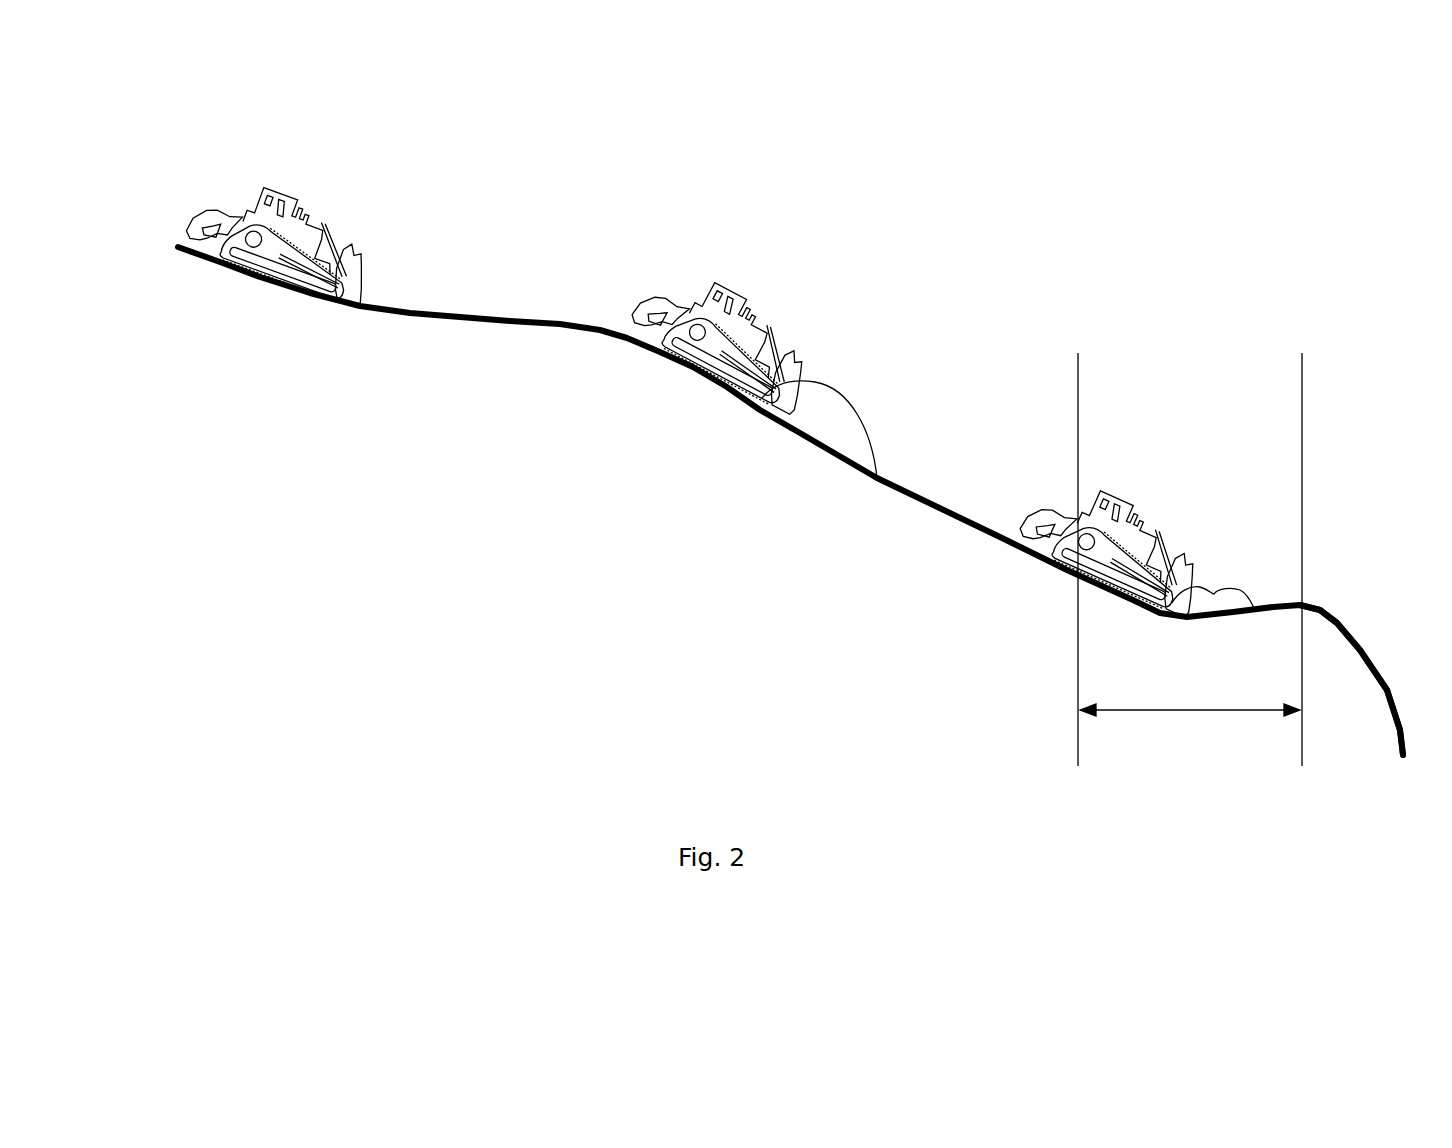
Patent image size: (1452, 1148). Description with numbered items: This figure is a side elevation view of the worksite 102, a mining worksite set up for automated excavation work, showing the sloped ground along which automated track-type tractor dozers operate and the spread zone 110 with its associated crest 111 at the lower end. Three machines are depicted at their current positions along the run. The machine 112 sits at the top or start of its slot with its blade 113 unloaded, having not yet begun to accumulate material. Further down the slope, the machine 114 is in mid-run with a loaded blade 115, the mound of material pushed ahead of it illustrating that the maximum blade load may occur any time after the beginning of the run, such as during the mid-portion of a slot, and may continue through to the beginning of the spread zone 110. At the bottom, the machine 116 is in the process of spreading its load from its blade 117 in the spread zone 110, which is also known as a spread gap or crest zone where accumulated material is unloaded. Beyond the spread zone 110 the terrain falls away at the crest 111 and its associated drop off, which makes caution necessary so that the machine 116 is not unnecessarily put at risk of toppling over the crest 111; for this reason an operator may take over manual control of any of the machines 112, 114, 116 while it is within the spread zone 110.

The worksite 102 is at (478, 326).
The spread zone 110 is at (1130, 718).
The crest 111 is at (1333, 613).
The machine 112 is at (306, 228).
The blade 113 is at (352, 275).
The machine 114 is at (727, 290).
The blade 115 is at (789, 376).
The machine 116 is at (1142, 529).
The blade 117 is at (1182, 584).